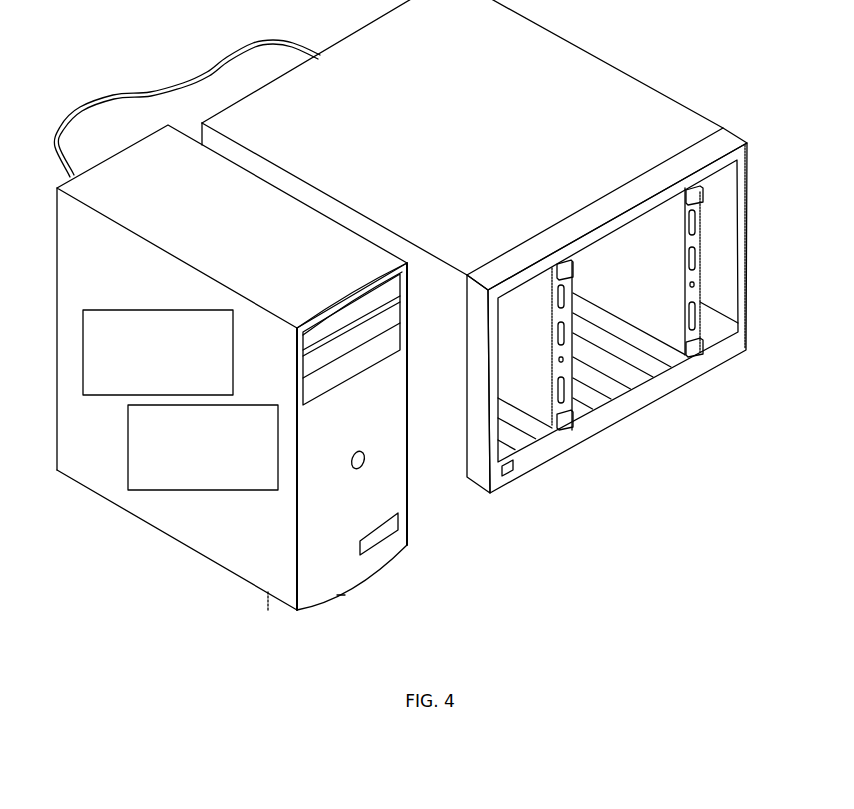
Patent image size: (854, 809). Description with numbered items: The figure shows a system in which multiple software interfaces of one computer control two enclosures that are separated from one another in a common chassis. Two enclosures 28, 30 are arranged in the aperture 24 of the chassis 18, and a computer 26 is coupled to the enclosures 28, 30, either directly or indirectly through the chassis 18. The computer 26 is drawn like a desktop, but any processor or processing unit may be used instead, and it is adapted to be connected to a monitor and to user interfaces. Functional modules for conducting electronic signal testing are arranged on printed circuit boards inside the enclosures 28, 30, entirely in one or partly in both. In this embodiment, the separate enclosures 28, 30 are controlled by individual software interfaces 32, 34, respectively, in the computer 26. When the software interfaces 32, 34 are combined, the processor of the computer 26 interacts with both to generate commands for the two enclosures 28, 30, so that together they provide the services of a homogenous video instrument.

The chassis 18 is at (482, 453).
The aperture 24 is at (618, 338).
The computer 26 is at (257, 575).
The enclosure 28 is at (572, 439).
The enclosure 30 is at (703, 364).
The software interface 32 is at (158, 352).
The software interface 34 is at (203, 447).